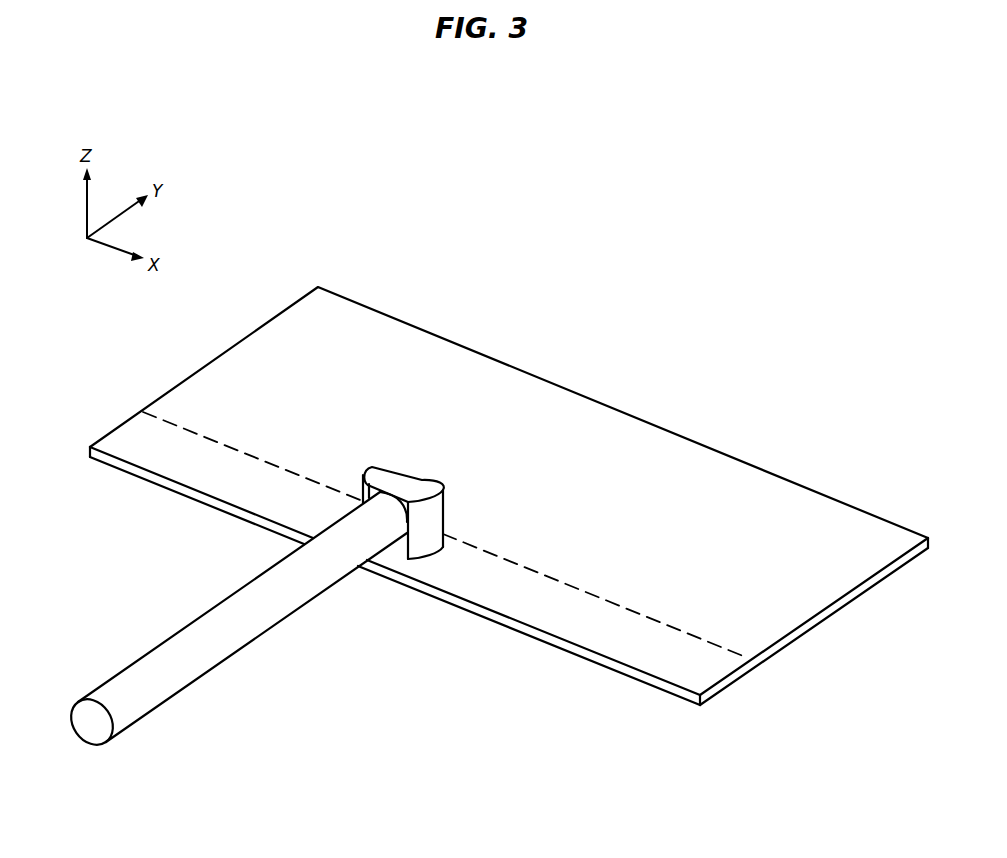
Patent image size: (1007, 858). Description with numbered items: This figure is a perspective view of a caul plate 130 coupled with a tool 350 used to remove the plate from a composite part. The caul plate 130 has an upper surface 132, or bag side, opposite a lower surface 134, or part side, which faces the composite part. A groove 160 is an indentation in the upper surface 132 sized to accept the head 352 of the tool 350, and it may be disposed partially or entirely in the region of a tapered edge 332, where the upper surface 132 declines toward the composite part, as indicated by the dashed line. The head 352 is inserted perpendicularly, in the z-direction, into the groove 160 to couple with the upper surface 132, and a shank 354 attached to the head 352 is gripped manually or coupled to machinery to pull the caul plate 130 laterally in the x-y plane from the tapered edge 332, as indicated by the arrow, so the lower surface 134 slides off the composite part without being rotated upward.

The caul plate 130 is at (509, 462).
The upper surface 132 is at (781, 491).
The lower surface 134 is at (809, 650).
The groove 160 is at (465, 533).
The tapered edge 332 is at (572, 622).
The tool 350 is at (253, 579).
The head 352 is at (390, 477).
The shank 354 is at (212, 620).